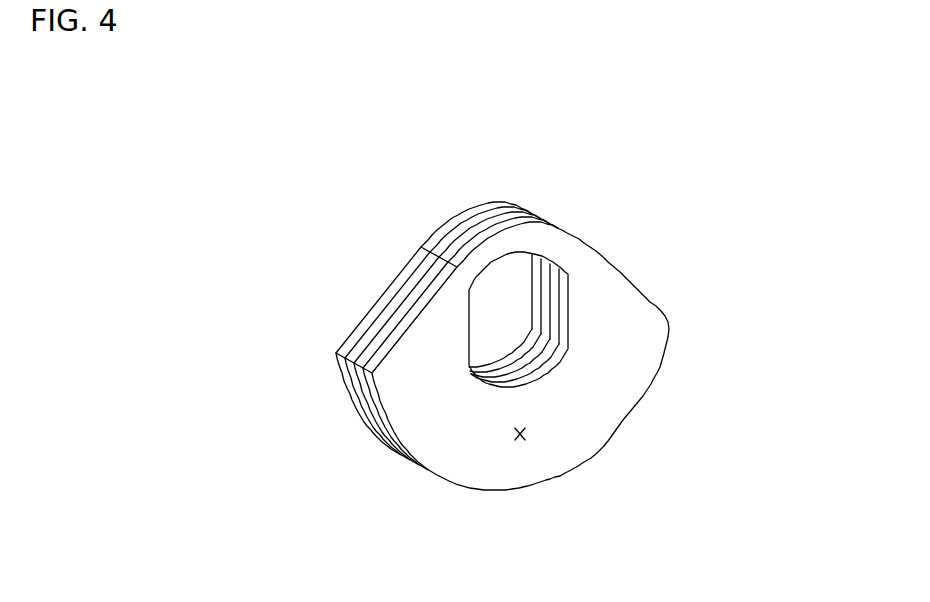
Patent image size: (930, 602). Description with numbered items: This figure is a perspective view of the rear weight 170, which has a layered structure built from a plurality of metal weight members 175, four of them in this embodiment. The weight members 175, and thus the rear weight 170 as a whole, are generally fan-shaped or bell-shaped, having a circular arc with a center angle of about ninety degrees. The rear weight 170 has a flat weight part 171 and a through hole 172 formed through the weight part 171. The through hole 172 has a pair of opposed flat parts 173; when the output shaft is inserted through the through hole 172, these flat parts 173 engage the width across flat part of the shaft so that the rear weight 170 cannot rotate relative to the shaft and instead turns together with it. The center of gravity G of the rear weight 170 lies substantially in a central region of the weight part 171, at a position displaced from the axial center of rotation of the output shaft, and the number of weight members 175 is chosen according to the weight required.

The rear weight 170 is at (534, 359).
The weight part 171 is at (457, 445).
The through hole 172 is at (483, 393).
The flat parts 173 is at (465, 328).
The weight members 175 is at (525, 172).
The center of gravity G is at (520, 433).